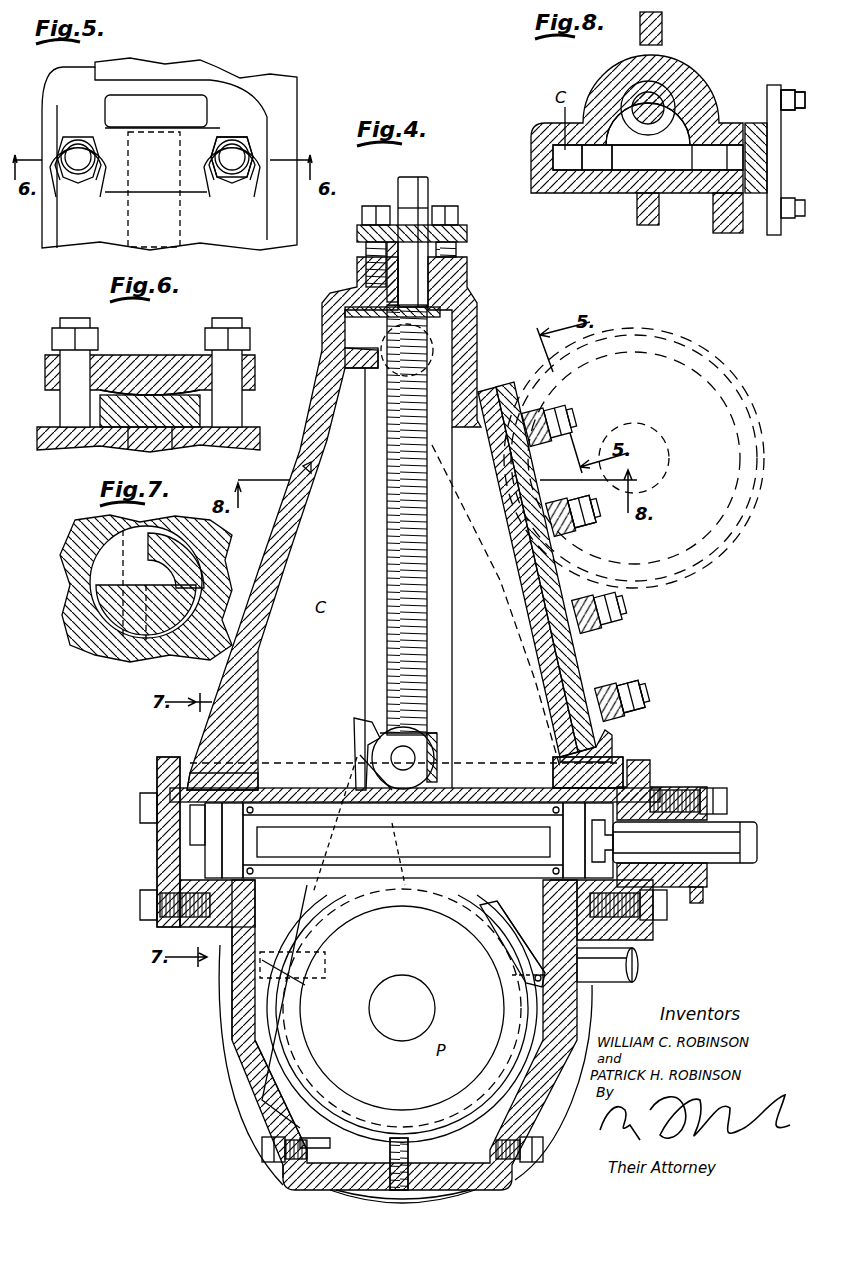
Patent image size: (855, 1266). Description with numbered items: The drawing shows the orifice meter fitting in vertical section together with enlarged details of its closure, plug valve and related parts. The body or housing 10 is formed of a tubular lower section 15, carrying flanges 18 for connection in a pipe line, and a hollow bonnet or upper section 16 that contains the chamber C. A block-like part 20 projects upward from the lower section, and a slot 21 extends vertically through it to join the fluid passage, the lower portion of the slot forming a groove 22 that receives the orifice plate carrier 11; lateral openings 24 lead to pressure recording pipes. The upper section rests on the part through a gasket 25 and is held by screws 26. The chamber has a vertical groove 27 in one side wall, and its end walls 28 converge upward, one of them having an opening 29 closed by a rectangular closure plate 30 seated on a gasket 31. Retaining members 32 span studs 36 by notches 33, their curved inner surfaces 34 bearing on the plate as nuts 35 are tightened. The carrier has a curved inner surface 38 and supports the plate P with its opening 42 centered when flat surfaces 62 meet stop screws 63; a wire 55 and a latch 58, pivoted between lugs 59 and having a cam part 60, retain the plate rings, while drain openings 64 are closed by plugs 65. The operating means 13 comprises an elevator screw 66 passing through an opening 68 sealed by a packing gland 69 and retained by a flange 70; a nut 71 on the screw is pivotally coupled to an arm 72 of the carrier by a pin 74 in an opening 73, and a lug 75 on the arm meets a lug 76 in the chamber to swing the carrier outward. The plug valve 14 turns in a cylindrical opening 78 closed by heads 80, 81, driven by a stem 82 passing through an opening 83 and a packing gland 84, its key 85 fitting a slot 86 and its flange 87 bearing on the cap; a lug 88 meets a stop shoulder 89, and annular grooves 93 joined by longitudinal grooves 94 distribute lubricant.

In FIG. 4, the body or housing 10 is at (222, 1008).
In FIG. 4, the orifice plate carrier 11 is at (668, 330).
In FIG. 4, the carrier operating means 13 is at (382, 561).
In FIG. 7, the valve 14 is at (112, 568).
In FIG. 4, the valve 14 is at (298, 808).
In FIG. 4, the lower housing section 15 is at (240, 1027).
In FIG. 8, the upper housing section or bonnet 16 is at (531, 155).
In FIG. 4, the flanges 18 is at (255, 1045).
In FIG. 4, the flange or block-like part 20 is at (255, 925).
In FIG. 4, the slot 21 is at (535, 790).
In FIG. 4, the groove 22 is at (505, 1180).
In FIG. 4, the lateral openings 24 is at (315, 958).
In FIG. 4, the gasket 25 is at (268, 788).
In FIG. 4, the screws or bolts 26 is at (200, 765).
In FIG. 8, the vertical recess or groove 27 is at (690, 73).
In FIG. 4, the vertical recess or groove 27 is at (452, 648).
In FIG. 8, the end walls 28 is at (624, 170).
In FIG. 4, the end walls 28 is at (309, 472).
In FIG. 6, the slot or elongate opening 29 is at (130, 448).
In FIG. 4, the slot or elongate opening 29 is at (620, 745).
In FIG. 5, the closure plate 30 is at (185, 95).
In FIG. 6, the closure plate 30 is at (100, 407).
In FIG. 8, the closure plate 30 is at (767, 153).
In FIG. 4, the closure plate 30 is at (592, 672).
In FIG. 4, the gasket 31 is at (490, 395).
In FIG. 5, the retaining members or lugs 32 is at (154, 189).
In FIG. 6, the retaining members or lugs 32 is at (123, 365).
In FIG. 8, the retaining members or lugs 32 is at (772, 235).
In FIG. 4, the retaining members or lugs 32 is at (600, 628).
In FIG. 5, the notches 33 is at (63, 197).
In FIG. 6, the curved inner surfaces 34 is at (153, 396).
In FIG. 5, the nuts 35 is at (250, 150).
In FIG. 6, the nuts 35 is at (245, 336).
In FIG. 8, the nuts 35 is at (793, 218).
In FIG. 4, the nuts 35 is at (582, 528).
In FIG. 5, the studs 36 is at (76, 145).
In FIG. 6, the studs 36 is at (235, 408).
In FIG. 8, the studs 36 is at (800, 90).
In FIG. 4, the studs 36 is at (640, 700).
In FIG. 4, the curved inner surface 38 is at (455, 1095).
In FIG. 4, the opening of the plate 42 is at (437, 1006).
In FIG. 4, the wire 55 is at (300, 1008).
In FIG. 4, the latch 58 is at (520, 962).
In FIG. 4, the lugs 59 is at (512, 972).
In FIG. 4, the cam part 60 is at (525, 985).
In FIG. 4, the flat surfaces 62 is at (372, 1145).
In FIG. 4, the stop screws 63 is at (410, 1152).
In FIG. 4, the drain openings 64 is at (280, 1167).
In FIG. 4, the plugs 65 is at (260, 1144).
In FIG. 8, the elevator screw 66 is at (636, 100).
In FIG. 4, the elevator screw 66 is at (430, 572).
In FIG. 4, the opening 68 is at (470, 300).
In FIG. 4, the packing gland 69 is at (440, 262).
In FIG. 4, the flange 70 is at (345, 312).
In FIG. 4, the follower or nut 71 is at (437, 738).
In FIG. 4, the rigid arm 72 is at (300, 920).
In FIG. 4, the transverse opening 73 is at (415, 760).
In FIG. 4, the stud or pin 74 is at (396, 754).
In FIG. 4, the projection or lug 75 is at (364, 725).
In FIG. 8, the lug 76 is at (593, 170).
In FIG. 4, the lug 76 is at (345, 356).
In FIG. 7, the cylindrical opening 78 is at (90, 620).
In FIG. 4, the cylindrical opening 78 is at (257, 892).
In FIG. 4, the head 80 is at (170, 843).
In FIG. 4, the head or cap 81 is at (652, 778).
In FIG. 4, the rotatable stem 82 is at (685, 842).
In FIG. 4, the opening 83 is at (655, 905).
In FIG. 4, the packing gland 84 is at (703, 882).
In FIG. 4, the key or tongue 85 is at (614, 841).
In FIG. 4, the slot 86 is at (562, 838).
In FIG. 4, the flange 87 is at (568, 882).
In FIG. 7, the lug 88 is at (200, 548).
In FIG. 4, the lug 88 is at (165, 830).
In FIG. 7, the stop shoulder 89 is at (98, 580).
In FIG. 4, the stop shoulder 89 is at (190, 855).
In FIG. 4, the annular lubricant grooves 93 is at (205, 876).
In FIG. 4, the longitudinal grooves 94 is at (512, 815).